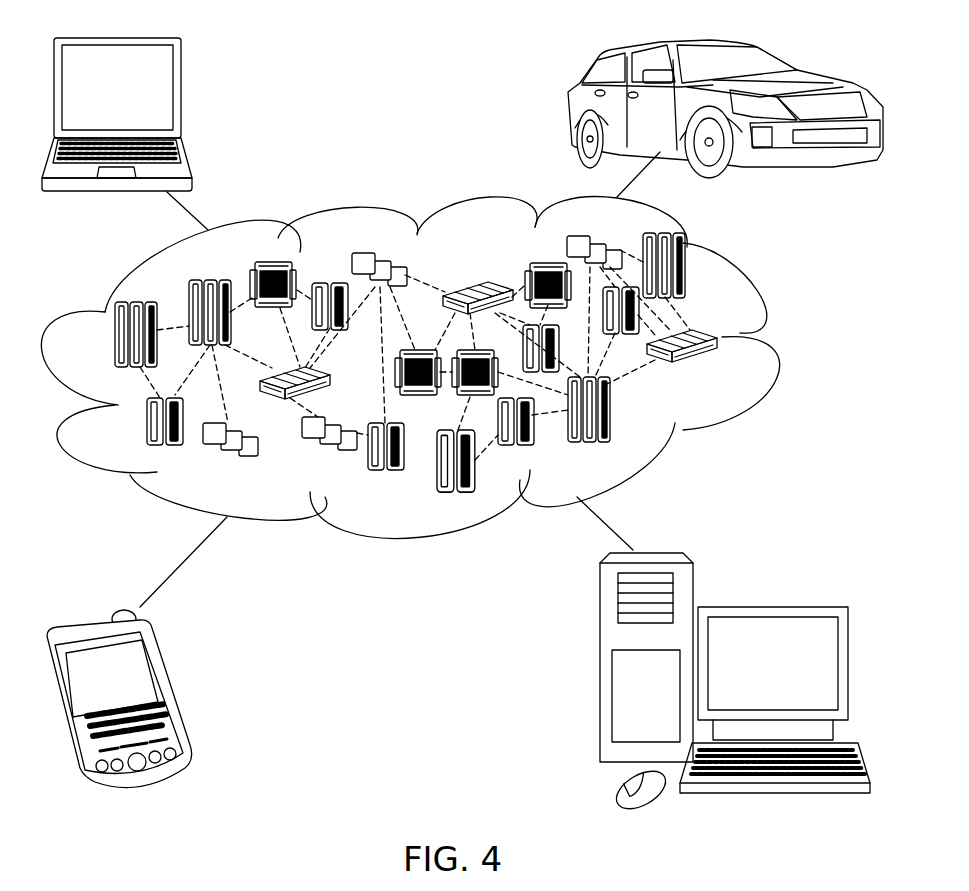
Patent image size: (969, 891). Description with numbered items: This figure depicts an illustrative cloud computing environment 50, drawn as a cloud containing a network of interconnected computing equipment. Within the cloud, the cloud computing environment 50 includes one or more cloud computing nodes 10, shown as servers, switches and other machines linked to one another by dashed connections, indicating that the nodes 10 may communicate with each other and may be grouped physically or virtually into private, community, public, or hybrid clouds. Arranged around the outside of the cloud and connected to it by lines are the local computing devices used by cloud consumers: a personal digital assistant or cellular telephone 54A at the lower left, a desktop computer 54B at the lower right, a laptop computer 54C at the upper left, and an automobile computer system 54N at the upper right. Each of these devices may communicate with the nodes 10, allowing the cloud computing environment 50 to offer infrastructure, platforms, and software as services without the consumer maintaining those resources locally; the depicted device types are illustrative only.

The cloud computing node 10 is at (718, 370).
The cloud computing environment 50 is at (776, 346).
The personal digital assistant or cellular telephone 54A is at (170, 692).
The desktop computer 54B is at (773, 607).
The laptop computer 54C is at (181, 96).
The automobile computer system 54N is at (570, 108).